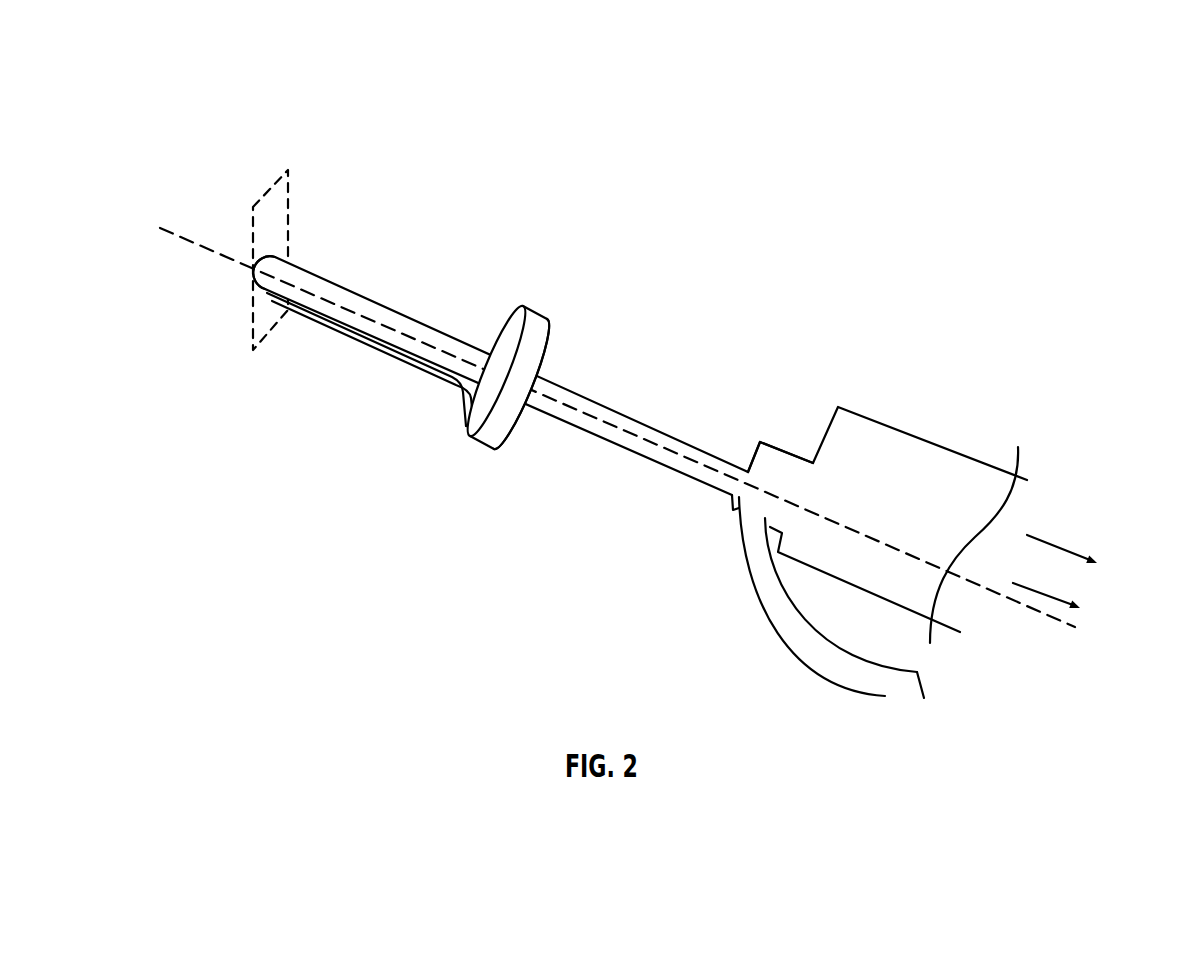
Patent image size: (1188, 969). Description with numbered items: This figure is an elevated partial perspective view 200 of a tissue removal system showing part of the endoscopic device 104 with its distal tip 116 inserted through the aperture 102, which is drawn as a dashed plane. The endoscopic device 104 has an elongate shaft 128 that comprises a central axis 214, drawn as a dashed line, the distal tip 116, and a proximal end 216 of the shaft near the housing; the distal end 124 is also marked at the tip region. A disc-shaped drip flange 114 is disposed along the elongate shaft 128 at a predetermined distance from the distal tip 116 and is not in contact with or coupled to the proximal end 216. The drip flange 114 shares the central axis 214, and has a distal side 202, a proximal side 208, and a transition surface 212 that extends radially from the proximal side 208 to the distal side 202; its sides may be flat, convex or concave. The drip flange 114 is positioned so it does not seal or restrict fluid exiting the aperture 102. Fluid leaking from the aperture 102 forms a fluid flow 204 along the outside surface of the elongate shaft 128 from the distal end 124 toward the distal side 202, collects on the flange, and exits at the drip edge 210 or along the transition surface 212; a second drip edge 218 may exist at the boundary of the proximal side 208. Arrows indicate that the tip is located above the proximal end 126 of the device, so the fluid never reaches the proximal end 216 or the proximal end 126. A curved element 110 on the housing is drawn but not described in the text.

The elevated partial perspective view 200 is at (182, 108).
The aperture 102 is at (252, 228).
The central axis 214 is at (178, 240).
The distal tip 116 is at (277, 258).
The distal end 124 is at (237, 286).
The distal side 202 is at (495, 348).
The drip flange 114 is at (544, 304).
The elongate shaft 128 is at (633, 417).
The fluid flow 204 is at (462, 403).
The proximal side 208 is at (513, 422).
The drip edge 210 is at (468, 442).
The transition surface 212 is at (480, 450).
The second drip edge 218 is at (497, 453).
The endoscopic device 104 is at (761, 399).
The proximal end of the elongate shaft 216 is at (752, 440).
The curved guard 110 is at (763, 620).
The proximal end 126 is at (1063, 577).